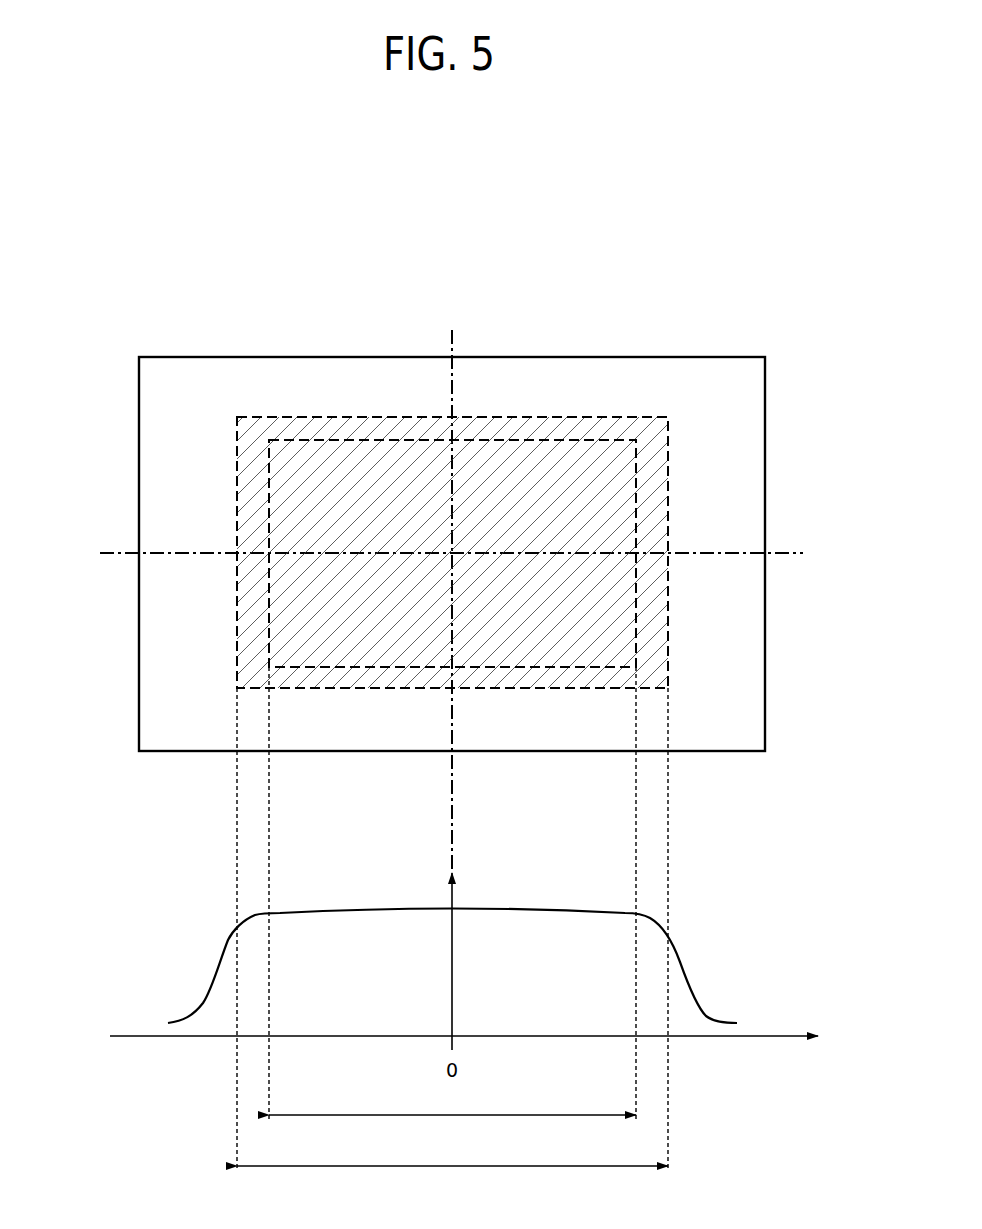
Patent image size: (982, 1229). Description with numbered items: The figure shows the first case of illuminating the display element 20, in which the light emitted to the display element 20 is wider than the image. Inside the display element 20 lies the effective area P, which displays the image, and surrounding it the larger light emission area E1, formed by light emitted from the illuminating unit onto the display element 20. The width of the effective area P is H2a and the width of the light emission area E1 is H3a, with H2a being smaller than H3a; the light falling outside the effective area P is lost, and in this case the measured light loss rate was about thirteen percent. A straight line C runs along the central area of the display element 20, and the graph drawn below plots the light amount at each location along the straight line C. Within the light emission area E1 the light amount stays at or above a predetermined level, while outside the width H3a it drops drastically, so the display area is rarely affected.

The display element 20 is at (121, 327).
The straight line C is at (440, 555).
The light emission area E1 is at (668, 494).
The effective area P is at (636, 636).
The width of the effective area H2a is at (452, 1129).
The width of the light emission area H3a is at (452, 1179).